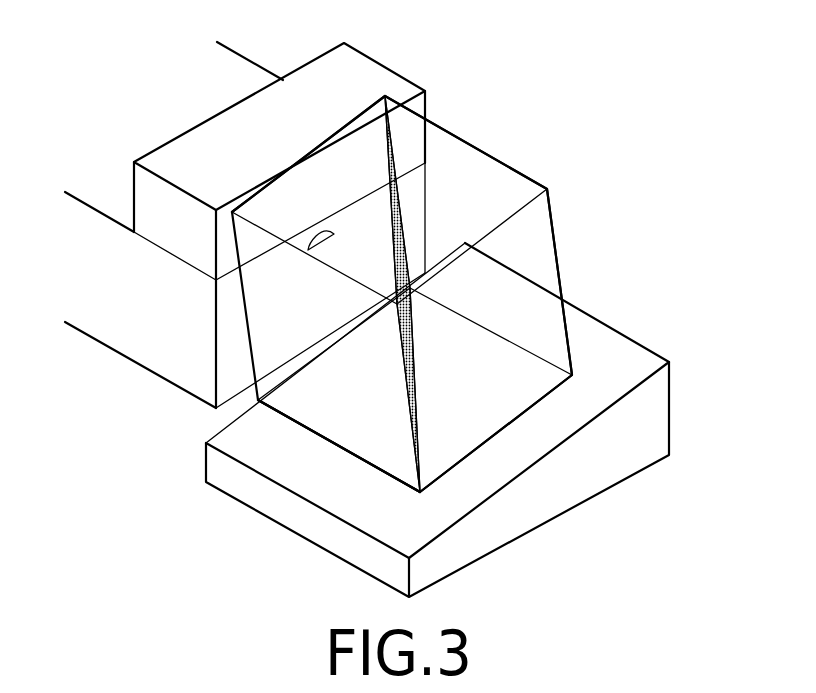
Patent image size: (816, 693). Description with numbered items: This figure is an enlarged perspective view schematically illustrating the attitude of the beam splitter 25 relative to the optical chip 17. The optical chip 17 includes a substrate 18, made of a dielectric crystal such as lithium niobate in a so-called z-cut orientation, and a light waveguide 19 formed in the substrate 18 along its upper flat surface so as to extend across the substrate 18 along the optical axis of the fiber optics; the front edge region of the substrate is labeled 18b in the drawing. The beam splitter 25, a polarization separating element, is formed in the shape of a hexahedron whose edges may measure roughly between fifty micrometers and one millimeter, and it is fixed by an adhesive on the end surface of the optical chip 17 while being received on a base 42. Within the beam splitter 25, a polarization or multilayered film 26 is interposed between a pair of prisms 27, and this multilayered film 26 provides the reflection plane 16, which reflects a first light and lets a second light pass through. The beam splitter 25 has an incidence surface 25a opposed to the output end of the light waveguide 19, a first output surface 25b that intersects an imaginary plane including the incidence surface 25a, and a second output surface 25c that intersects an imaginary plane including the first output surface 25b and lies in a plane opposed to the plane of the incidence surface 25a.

The reflection plane 16 is at (411, 388).
The optical chip 17 is at (253, 61).
The substrate 18 is at (123, 350).
The front edge of lower block 18b is at (229, 368).
The light waveguide 19 is at (349, 242).
The beam splitter 25 is at (466, 126).
The incidence surface 25a is at (325, 140).
The first output surface 25b is at (323, 418).
The second output surface 25c is at (557, 258).
The multilayered film 26 is at (411, 388).
The prism 27 is at (530, 178).
The base 42 is at (668, 430).